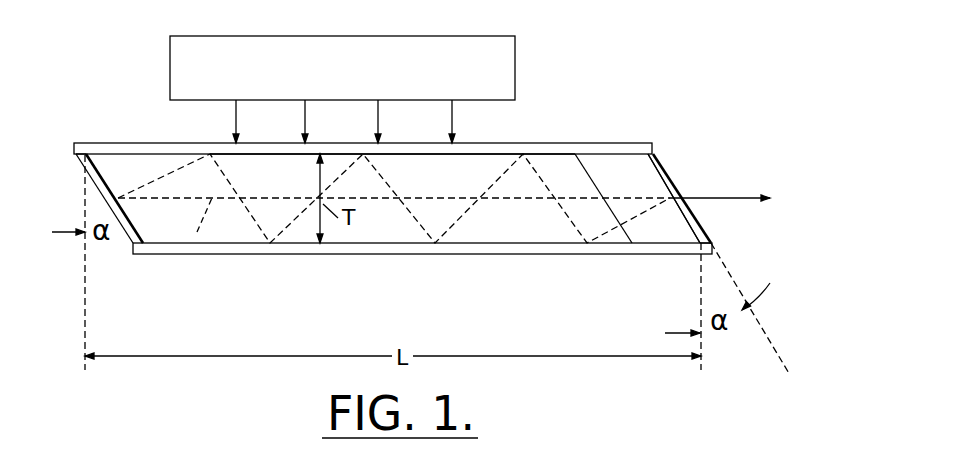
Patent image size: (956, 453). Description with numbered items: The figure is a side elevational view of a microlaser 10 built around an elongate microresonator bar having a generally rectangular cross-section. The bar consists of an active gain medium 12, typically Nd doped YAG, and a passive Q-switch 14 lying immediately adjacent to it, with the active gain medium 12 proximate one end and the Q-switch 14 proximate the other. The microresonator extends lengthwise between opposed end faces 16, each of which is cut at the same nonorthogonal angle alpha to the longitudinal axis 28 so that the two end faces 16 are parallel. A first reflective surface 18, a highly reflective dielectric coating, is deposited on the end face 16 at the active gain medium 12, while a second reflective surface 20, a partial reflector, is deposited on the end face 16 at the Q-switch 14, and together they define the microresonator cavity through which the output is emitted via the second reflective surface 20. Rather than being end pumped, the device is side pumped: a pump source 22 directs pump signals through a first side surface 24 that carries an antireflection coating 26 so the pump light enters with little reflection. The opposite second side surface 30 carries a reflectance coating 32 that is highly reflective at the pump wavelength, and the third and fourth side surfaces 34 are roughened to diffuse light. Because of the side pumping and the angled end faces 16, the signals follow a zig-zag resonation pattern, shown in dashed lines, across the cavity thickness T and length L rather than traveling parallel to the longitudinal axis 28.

The microlaser 10 is at (624, 54).
The active gain medium 12 is at (393, 219).
The Q-switch 14 is at (680, 256).
The opposed end faces 16 is at (129, 218).
The first reflective surface 18 is at (82, 167).
The second reflective surface 20 is at (665, 173).
The pump source 22 is at (515, 62).
The first side surface 24 is at (482, 155).
The antireflection coating 26 is at (115, 143).
The longitudinal axis 28 is at (199, 232).
The second side surface 30 is at (542, 240).
The reflectance coating 32 is at (613, 246).
The third and fourth side surfaces 34 is at (394, 241).